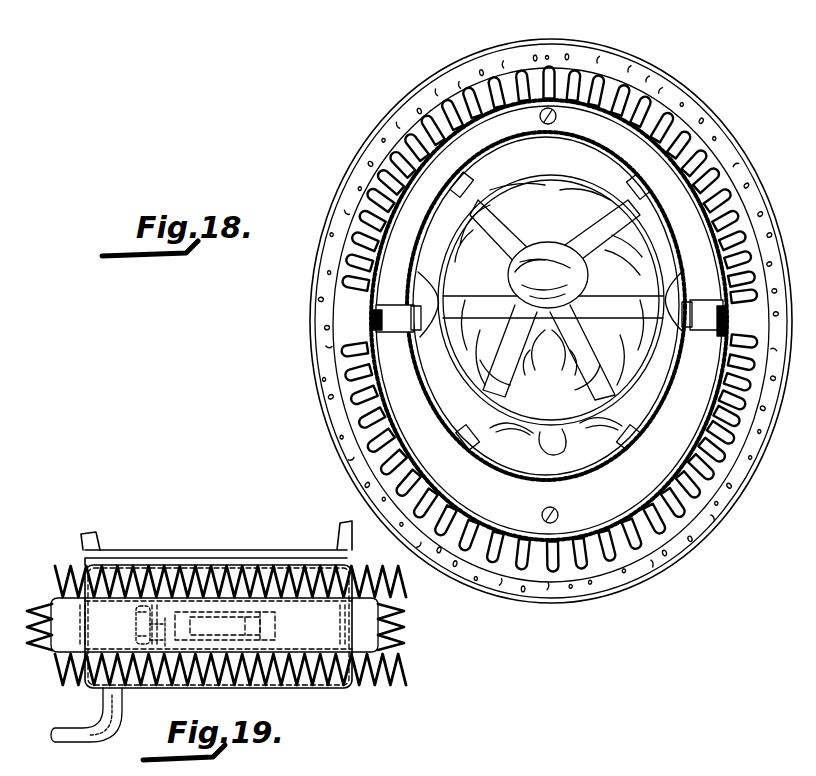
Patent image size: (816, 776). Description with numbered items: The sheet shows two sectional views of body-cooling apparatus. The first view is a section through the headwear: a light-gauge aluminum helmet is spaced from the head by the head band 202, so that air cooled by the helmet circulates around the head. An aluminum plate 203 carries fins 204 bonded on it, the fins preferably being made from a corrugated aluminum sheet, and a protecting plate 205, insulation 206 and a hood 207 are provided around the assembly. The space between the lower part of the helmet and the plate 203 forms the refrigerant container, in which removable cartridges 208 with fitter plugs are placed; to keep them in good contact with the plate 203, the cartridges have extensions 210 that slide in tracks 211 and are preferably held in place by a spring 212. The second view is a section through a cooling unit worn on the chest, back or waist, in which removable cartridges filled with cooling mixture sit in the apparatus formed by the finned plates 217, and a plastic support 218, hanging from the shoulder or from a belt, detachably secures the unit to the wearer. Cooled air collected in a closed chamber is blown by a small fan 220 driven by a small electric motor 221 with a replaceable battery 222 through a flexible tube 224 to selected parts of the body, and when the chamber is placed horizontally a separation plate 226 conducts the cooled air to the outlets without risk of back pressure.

In FIG. 18, the head band 202 is at (564, 180).
In FIG. 18, the aluminum plate 203 is at (677, 130).
In FIG. 18, the fins 204 is at (712, 153).
In FIG. 18, the protecting plate 205 is at (645, 90).
In FIG. 18, the insulation 206 is at (468, 70).
In FIG. 18, the hood 207 is at (418, 90).
In FIG. 18, the removable cartridges 208 is at (598, 131).
In FIG. 18, the extensions 210 is at (381, 305).
In FIG. 18, the tracks 211 is at (372, 327).
In FIG. 18, the spring 212 is at (540, 116).
In FIG. 19, the finned plates 217 is at (61, 572).
In FIG. 19, the plastic support 218 is at (89, 532).
In FIG. 19, the fan 220 is at (135, 613).
In FIG. 19, the electric motor 221 is at (262, 623).
In FIG. 19, the battery 222 is at (385, 602).
In FIG. 19, the flexible tube 224 is at (74, 732).
In FIG. 19, the separation plate 226 is at (142, 641).